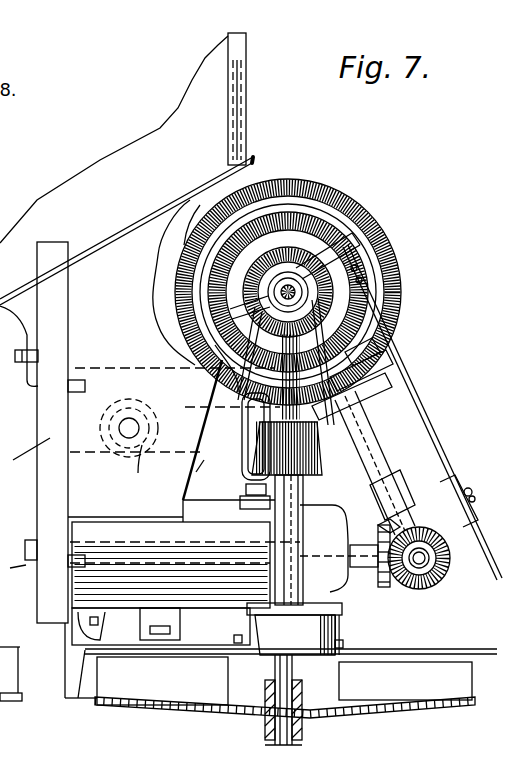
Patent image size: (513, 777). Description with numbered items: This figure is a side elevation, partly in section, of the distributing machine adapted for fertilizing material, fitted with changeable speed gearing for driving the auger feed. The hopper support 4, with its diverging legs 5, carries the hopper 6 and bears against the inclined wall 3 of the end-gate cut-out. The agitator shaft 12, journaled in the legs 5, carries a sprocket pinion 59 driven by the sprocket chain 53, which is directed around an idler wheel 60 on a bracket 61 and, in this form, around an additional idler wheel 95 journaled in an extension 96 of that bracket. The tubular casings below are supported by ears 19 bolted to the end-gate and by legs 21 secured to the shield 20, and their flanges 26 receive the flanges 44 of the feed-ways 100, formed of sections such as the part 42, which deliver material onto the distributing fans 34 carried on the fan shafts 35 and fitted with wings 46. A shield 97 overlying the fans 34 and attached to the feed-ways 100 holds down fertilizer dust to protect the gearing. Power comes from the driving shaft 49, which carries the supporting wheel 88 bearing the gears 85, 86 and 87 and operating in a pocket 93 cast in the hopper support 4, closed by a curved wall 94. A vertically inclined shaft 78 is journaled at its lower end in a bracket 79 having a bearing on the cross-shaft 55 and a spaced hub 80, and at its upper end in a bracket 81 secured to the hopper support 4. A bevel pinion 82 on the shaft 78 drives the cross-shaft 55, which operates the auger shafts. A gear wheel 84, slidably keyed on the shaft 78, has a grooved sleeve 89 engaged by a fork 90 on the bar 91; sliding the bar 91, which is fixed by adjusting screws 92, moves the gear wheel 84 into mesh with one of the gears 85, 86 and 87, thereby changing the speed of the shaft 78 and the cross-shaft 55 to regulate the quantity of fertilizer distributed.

The inclined wall 3 is at (13, 567).
The hopper support 4 is at (137, 432).
The legs 5 is at (92, 473).
The hopper 6 is at (114, 139).
The agitator shaft 12 is at (118, 434).
The ears 19 is at (70, 594).
The shield 20 is at (126, 650).
The legs 21 is at (172, 624).
The flanges 26 is at (345, 607).
The distributing fans 34 is at (430, 710).
The fan shafts 35 is at (305, 723).
The feed-way part 42 is at (294, 629).
The flanges 44 is at (342, 613).
The wings 46 is at (248, 664).
The driving shaft 49 is at (306, 296).
The sprocket chain 53 is at (232, 449).
The cross-shaft 55 is at (427, 590).
The sprocket pinion 59 is at (155, 464).
The idler wheel 60 is at (216, 390).
The bracket 61 is at (200, 367).
The inclined shaft 78 is at (366, 460).
The bracket 79 is at (452, 545).
The hub 80 is at (375, 494).
The bracket 81 is at (386, 259).
The bevel pinion 82 is at (452, 488).
The gear wheel 84 is at (378, 369).
The gear 85 is at (368, 230).
The gear 86 is at (340, 212).
The gear 87 is at (306, 187).
The supporting wheel 88 is at (400, 273).
The grooved sleeve 89 is at (362, 405).
The fork 90 is at (392, 378).
The bar 91 is at (440, 452).
The adjusting screws 92 is at (476, 494).
The pocket 93 is at (200, 198).
The curved wall 94 is at (176, 272).
The idler wheel 95 is at (316, 452).
The extension 96 is at (257, 483).
The shield 97 is at (250, 645).
The feed-ways 100 is at (305, 656).